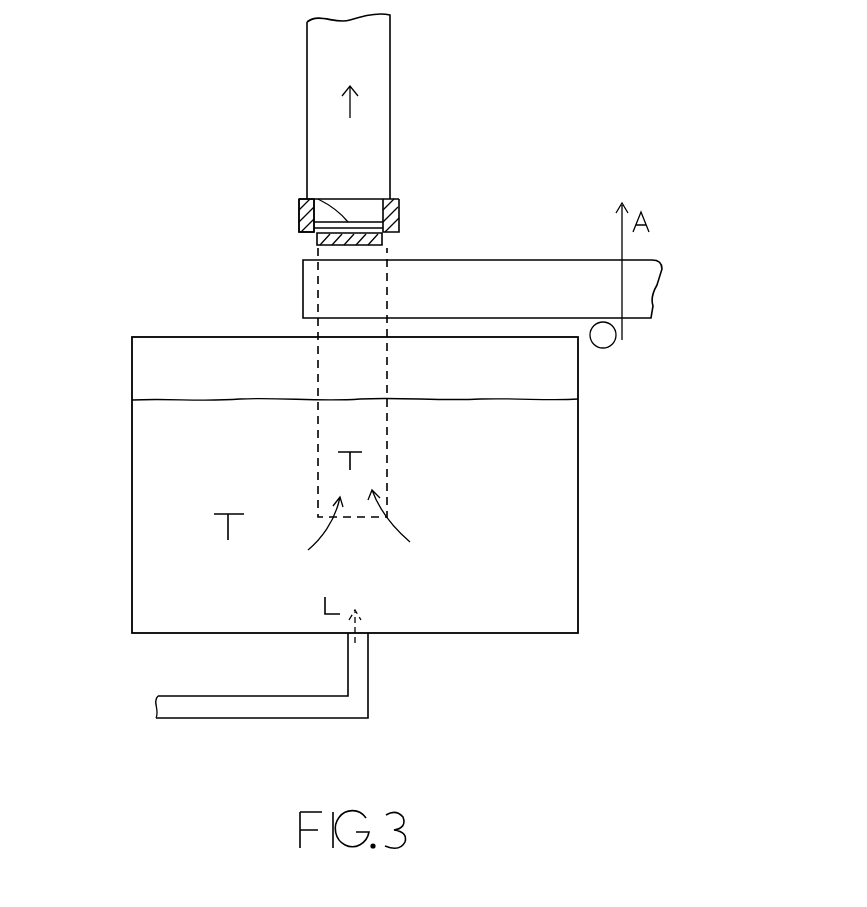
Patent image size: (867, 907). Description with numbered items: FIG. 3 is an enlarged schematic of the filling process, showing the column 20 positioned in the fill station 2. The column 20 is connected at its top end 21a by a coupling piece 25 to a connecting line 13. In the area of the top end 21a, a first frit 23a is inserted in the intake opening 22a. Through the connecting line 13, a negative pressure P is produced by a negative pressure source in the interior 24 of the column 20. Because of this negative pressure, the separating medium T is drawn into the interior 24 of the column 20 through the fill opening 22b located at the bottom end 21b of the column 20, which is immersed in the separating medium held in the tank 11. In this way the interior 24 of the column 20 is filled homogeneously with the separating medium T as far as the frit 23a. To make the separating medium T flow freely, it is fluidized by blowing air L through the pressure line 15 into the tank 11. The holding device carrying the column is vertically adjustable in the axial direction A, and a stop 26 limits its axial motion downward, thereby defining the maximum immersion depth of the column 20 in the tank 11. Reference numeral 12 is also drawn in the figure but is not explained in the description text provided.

The fill station 2 is at (652, 516).
The tank 11 is at (133, 505).
The plate / substrate 12 is at (652, 254).
The connecting line 13 is at (390, 65).
The pressure line 15 is at (197, 718).
The column 20 is at (322, 356).
The top end 21a is at (312, 247).
The bottom end 21b is at (372, 522).
The intake opening 22a is at (308, 196).
The fill opening 22b is at (350, 522).
The first frit 23a is at (396, 231).
The interior 24 is at (332, 376).
The coupling piece 25 is at (400, 200).
The stop 26 is at (604, 344).